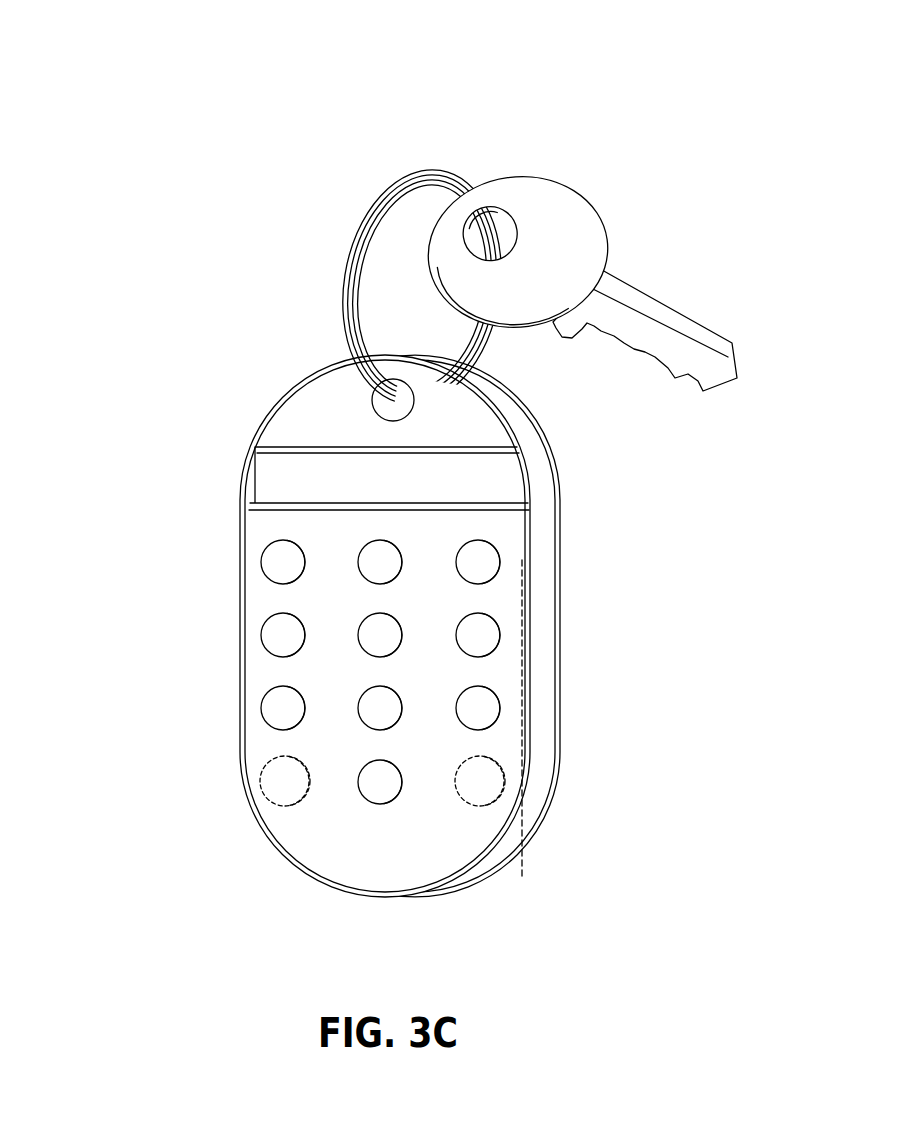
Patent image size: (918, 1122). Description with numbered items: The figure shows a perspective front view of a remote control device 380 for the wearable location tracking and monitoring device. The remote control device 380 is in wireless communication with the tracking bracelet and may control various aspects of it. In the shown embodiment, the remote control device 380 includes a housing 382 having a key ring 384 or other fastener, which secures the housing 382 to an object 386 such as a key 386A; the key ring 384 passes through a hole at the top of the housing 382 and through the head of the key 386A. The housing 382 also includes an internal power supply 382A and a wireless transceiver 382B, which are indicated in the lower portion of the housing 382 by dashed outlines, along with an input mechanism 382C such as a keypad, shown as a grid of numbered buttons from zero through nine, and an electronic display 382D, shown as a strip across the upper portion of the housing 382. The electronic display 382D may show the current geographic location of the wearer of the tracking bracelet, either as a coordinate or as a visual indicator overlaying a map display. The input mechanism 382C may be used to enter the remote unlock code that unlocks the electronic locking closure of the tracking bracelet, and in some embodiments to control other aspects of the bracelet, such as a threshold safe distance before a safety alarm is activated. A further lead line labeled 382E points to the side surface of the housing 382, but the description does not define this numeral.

The remote control device 380 is at (122, 110).
The housing 382 is at (258, 377).
The internal power supply 382A is at (475, 788).
The wireless transceiver 382B is at (277, 790).
The input mechanism 382C is at (513, 630).
The electronic display 382D is at (257, 470).
The housing surface 382E is at (513, 656).
The key ring 384 is at (432, 170).
The object 386 is at (637, 237).
The key 386A is at (667, 306).